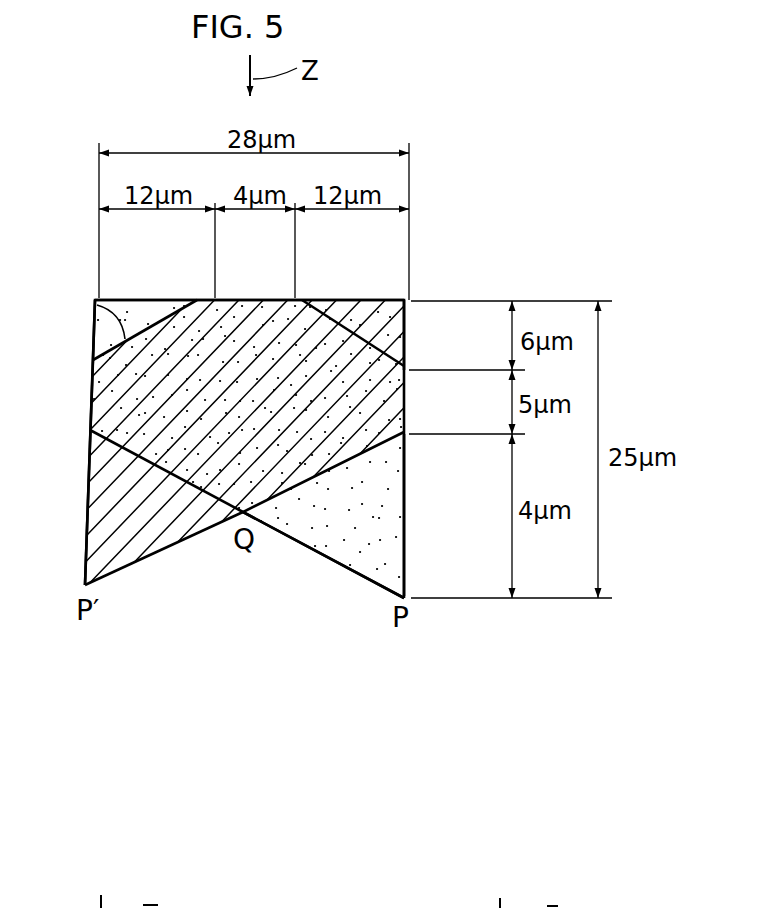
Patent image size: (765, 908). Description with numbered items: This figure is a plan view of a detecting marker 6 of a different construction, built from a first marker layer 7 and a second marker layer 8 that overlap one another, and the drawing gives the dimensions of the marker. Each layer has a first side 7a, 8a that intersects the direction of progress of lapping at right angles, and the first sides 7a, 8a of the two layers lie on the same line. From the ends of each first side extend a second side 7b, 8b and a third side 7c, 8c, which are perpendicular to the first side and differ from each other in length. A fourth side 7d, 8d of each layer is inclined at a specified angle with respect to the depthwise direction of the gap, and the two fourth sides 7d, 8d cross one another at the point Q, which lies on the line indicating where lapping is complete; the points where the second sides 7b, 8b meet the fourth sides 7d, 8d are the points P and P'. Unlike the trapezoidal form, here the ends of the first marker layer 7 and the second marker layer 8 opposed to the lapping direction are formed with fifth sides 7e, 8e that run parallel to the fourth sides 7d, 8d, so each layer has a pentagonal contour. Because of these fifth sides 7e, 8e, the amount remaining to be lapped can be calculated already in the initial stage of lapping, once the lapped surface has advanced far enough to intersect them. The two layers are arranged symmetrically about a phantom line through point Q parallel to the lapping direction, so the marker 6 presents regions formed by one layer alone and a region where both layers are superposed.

The detecting marker 6 is at (448, 226).
The first marker layer 7 is at (383, 545).
The first side 7a is at (128, 298).
The second side 7b is at (404, 470).
The third side 7c is at (95, 340).
The fourth side 7d is at (315, 552).
The fifth side 7e is at (405, 331).
The second marker layer 8 is at (88, 540).
The first side 8a is at (348, 300).
The second side 8b is at (88, 462).
The third side 8c is at (405, 352).
The fourth side 8d is at (165, 549).
The fifth side 8e is at (95, 300).